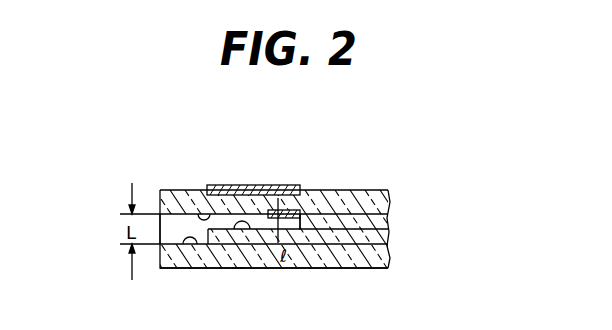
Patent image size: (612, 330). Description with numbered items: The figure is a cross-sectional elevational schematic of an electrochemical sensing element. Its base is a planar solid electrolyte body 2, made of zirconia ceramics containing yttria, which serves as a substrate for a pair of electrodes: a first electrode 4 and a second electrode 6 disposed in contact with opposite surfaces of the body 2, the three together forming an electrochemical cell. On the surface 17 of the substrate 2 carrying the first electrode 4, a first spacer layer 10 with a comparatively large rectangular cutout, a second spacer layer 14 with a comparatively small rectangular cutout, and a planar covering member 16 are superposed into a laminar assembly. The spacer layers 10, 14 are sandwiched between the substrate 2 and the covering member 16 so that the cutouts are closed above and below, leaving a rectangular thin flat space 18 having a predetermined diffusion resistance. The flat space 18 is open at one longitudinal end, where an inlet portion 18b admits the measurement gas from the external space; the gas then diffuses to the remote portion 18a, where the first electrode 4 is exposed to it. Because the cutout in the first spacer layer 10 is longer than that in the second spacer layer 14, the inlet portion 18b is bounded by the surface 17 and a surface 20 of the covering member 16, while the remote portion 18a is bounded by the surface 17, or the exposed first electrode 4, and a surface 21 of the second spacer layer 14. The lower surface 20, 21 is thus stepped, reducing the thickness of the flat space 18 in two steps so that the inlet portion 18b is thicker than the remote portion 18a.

The planar solid electrolyte body 2 is at (372, 205).
The first electrode 4 is at (297, 210).
The second electrode 6 is at (242, 186).
The first spacer layer 10 is at (370, 222).
The second spacer layer 14 is at (381, 237).
The planar covering member 16 is at (379, 262).
The surface of the planar solid electrolyte substrate 17 is at (198, 213).
The thin flat space 18 is at (188, 226).
The remote portion 18a is at (301, 247).
The inlet portion 18b is at (161, 251).
The surface of the covering member 20 is at (179, 247).
The surface of the second spacer layer 21 is at (238, 268).